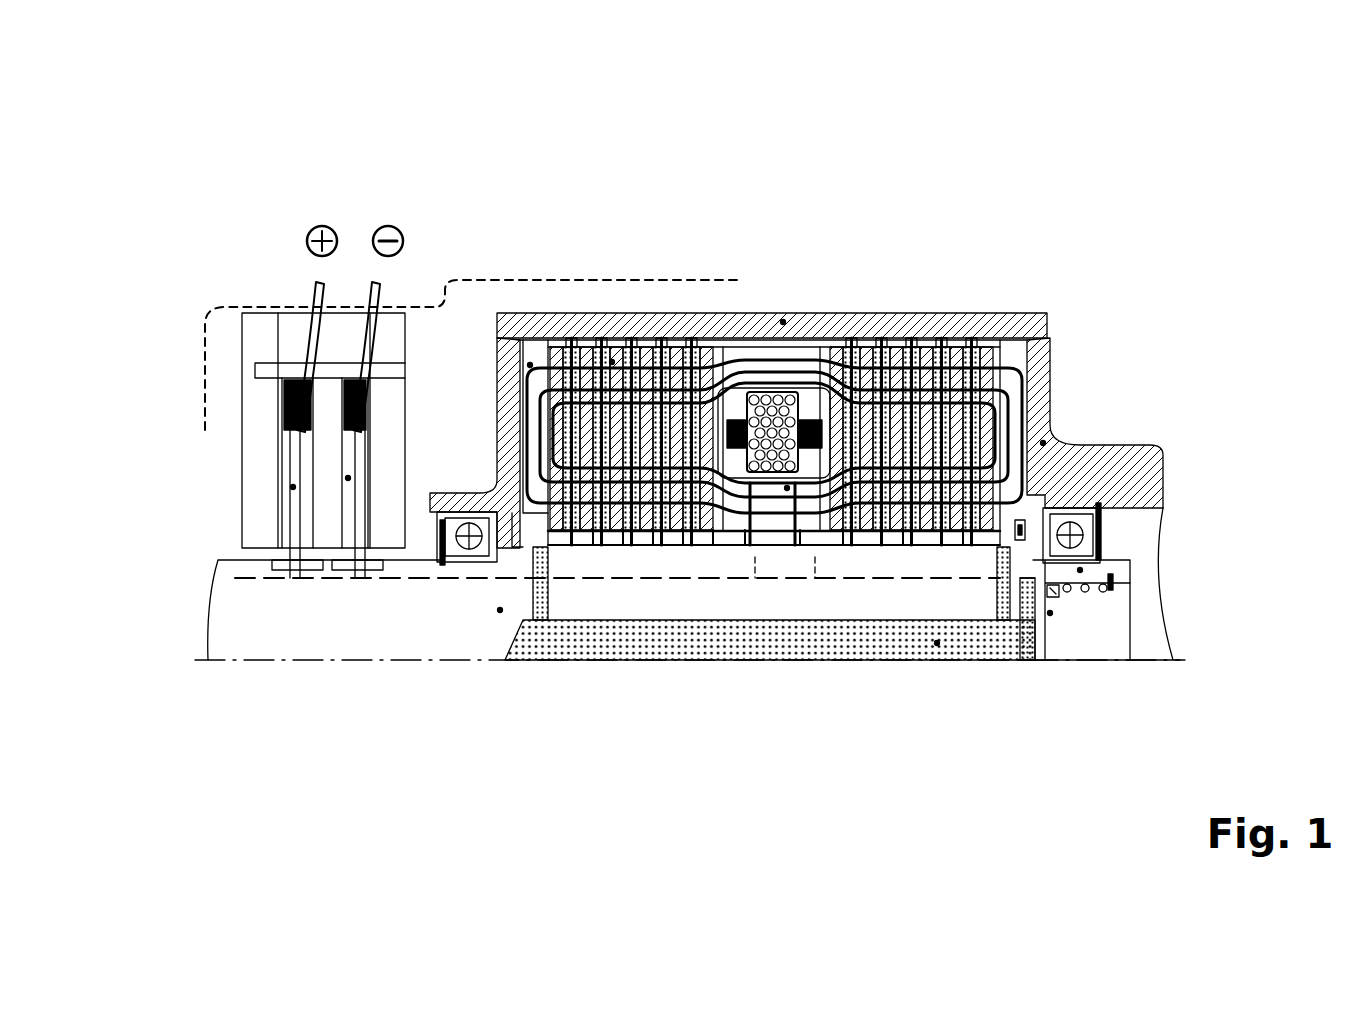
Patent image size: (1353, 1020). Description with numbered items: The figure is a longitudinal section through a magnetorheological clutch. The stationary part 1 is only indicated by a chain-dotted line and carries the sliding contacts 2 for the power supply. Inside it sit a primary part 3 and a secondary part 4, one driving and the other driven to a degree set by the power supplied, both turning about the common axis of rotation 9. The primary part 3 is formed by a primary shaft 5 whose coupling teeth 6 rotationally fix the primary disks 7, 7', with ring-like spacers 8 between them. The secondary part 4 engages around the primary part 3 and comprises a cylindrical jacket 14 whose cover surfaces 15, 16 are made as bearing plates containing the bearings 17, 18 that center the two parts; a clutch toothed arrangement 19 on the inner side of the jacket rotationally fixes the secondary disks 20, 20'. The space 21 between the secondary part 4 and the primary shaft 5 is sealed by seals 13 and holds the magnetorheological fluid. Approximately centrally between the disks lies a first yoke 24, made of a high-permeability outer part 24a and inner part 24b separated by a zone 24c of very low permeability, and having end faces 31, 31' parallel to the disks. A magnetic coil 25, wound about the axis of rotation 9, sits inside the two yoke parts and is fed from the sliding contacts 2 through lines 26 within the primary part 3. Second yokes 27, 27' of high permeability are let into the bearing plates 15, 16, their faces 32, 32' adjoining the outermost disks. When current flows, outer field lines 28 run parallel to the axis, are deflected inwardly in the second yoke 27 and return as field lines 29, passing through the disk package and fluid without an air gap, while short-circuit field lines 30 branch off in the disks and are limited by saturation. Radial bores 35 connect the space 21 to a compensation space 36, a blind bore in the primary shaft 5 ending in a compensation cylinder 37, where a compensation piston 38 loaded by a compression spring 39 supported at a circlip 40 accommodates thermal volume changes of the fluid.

The stationary part 1 is at (471, 335).
The sliding contacts 2 is at (348, 478).
The primary part 3 is at (378, 680).
The secondary part 4 is at (1067, 397).
The primary shaft 5 is at (523, 547).
The coupling teeth 6 is at (598, 546).
The primary disks 7 is at (629, 668).
The primary disks 7' is at (891, 668).
The ring-like spacers 8 is at (640, 546).
The axis of rotation 9 is at (1105, 665).
The seals 13 is at (500, 610).
The cylindrical jacket 14 is at (783, 322).
The cover surface 15 is at (1043, 443).
The cover surface 16 is at (520, 496).
The bearing 17 is at (1080, 500).
The bearing 18 is at (503, 473).
The clutch toothed arrangement 19 is at (655, 350).
The secondary disks 20 is at (690, 320).
The secondary disks 20' is at (1044, 320).
The space 21 is at (612, 362).
The first yoke 24 is at (745, 350).
The outer part 24a is at (862, 340).
The inner part 24b is at (805, 548).
The zone of very low permeability 24c is at (893, 345).
The magnetic coil 25 is at (835, 340).
The lines 26 is at (745, 548).
The second yoke 27 is at (446, 320).
The second yoke 27' is at (902, 289).
The outer field lines 28 is at (757, 333).
The field lines 29 is at (770, 546).
The short-circuit field lines 30 is at (1040, 405).
The end face 31 is at (662, 668).
The end face 31' is at (833, 668).
The face 32 is at (587, 312).
The face 32' is at (970, 668).
The radial bores 35 is at (540, 590).
The compensation space 36 is at (937, 643).
The compensation cylinder 37 is at (1085, 522).
The compensation piston 38 is at (1050, 613).
The compression spring 39 is at (1062, 540).
The circlip 40 is at (1080, 570).